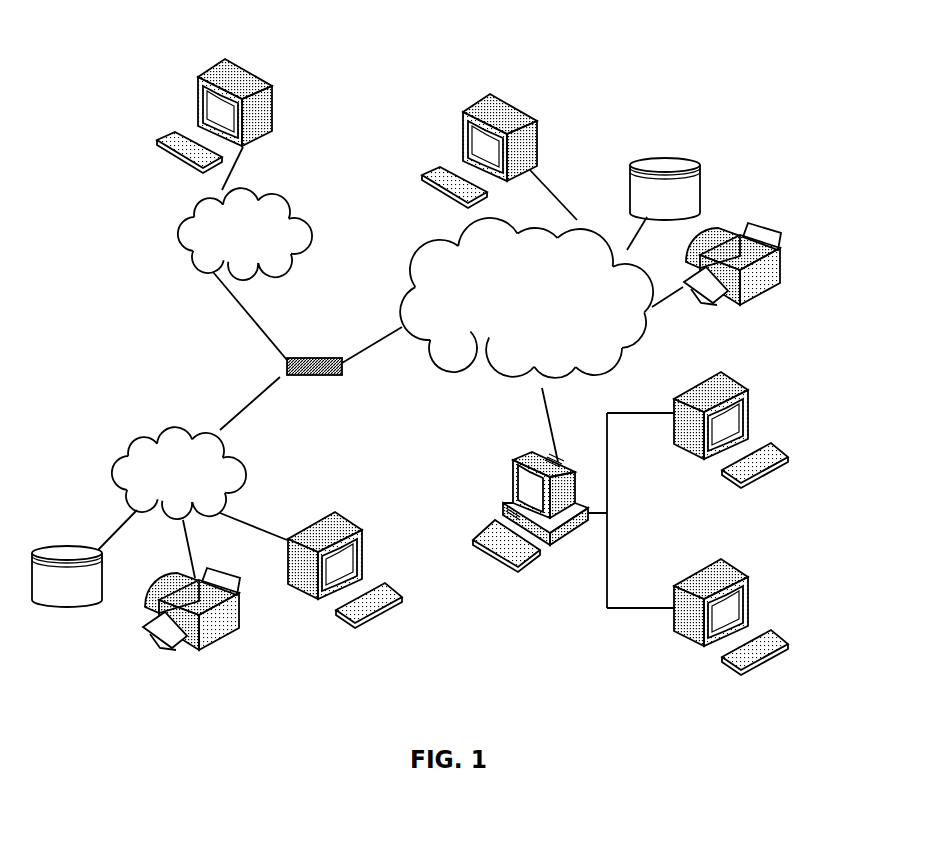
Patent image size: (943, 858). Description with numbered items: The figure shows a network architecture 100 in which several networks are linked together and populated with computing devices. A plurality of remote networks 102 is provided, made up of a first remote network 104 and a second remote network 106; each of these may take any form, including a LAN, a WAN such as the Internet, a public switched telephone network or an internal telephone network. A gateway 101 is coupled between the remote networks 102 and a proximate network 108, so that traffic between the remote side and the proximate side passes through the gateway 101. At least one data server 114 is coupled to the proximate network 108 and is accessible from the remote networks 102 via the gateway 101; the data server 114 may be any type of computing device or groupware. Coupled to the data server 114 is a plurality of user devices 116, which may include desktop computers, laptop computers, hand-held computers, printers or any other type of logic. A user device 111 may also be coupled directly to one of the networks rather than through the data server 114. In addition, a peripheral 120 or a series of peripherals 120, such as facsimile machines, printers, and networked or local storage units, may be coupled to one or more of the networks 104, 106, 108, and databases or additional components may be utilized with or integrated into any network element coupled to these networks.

The network architecture 100 is at (139, 45).
The gateway 101 is at (302, 358).
The remote networks 102 is at (161, 289).
The first remote network 104 is at (120, 452).
The second remote network 106 is at (308, 210).
The proximate network 108 is at (620, 361).
The user device 111 is at (538, 121).
The data server 114 is at (513, 470).
The user devices 116 is at (272, 88).
The peripheral 120 is at (700, 165).